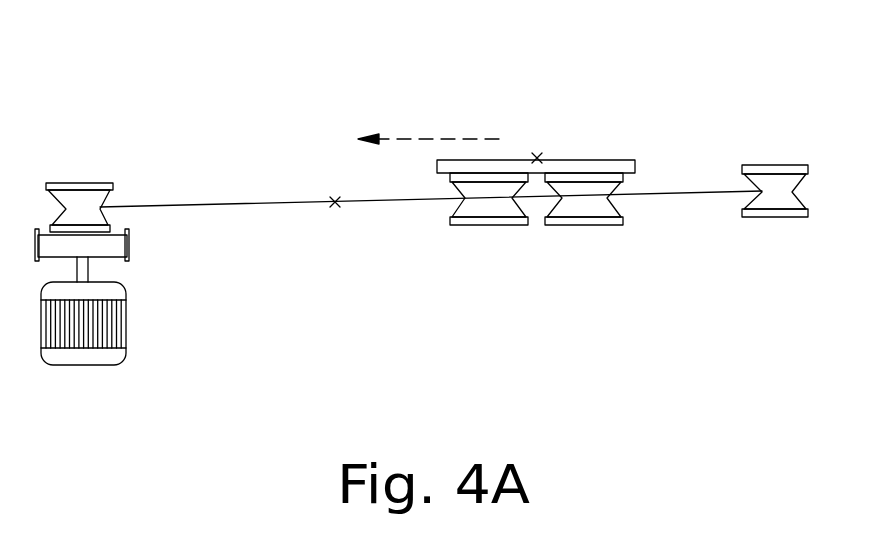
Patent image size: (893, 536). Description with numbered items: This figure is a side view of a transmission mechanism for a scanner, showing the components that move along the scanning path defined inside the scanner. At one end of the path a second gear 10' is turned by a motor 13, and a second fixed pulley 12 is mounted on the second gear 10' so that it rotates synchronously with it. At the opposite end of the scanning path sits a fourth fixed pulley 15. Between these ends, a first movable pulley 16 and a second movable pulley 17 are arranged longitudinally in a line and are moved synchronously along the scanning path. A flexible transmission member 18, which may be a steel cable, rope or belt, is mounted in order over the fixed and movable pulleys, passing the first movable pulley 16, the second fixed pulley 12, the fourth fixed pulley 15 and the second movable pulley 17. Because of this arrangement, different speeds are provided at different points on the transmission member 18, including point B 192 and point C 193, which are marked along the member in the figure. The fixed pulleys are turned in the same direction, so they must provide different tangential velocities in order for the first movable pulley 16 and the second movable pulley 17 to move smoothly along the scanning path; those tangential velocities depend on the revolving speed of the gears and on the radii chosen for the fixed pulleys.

The second gear 10' is at (142, 273).
The second fixed pulley 12 is at (73, 192).
The motor 13 is at (77, 358).
The fourth fixed pulley 15 is at (777, 204).
The first movable pulley 16 is at (495, 208).
The second movable pulley 17 is at (588, 185).
The flexible transmission member 18 is at (237, 205).
The point B 192 is at (337, 208).
The point C 193 is at (538, 155).